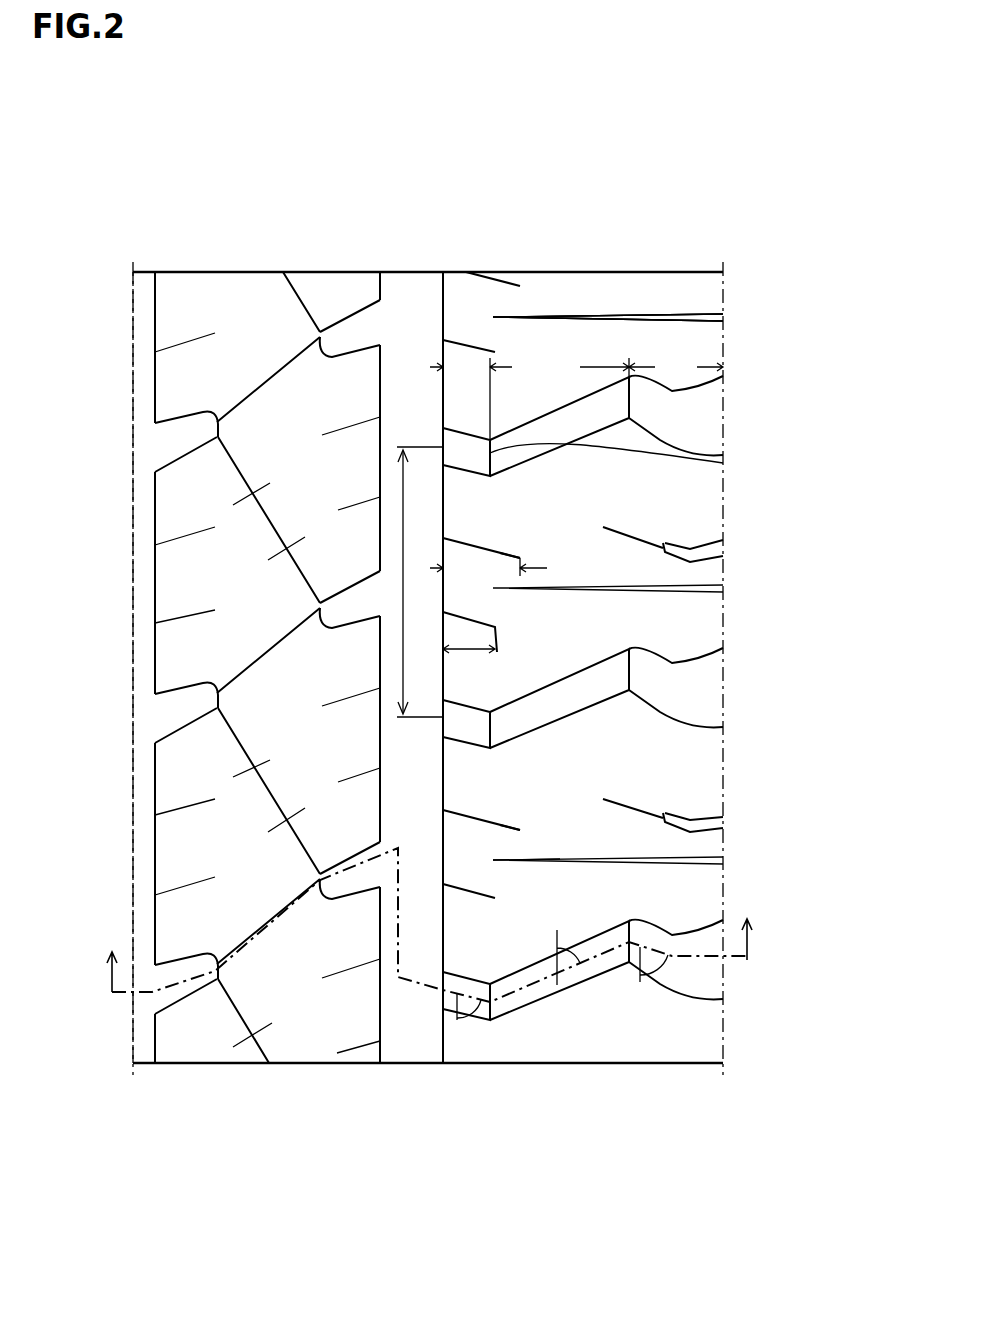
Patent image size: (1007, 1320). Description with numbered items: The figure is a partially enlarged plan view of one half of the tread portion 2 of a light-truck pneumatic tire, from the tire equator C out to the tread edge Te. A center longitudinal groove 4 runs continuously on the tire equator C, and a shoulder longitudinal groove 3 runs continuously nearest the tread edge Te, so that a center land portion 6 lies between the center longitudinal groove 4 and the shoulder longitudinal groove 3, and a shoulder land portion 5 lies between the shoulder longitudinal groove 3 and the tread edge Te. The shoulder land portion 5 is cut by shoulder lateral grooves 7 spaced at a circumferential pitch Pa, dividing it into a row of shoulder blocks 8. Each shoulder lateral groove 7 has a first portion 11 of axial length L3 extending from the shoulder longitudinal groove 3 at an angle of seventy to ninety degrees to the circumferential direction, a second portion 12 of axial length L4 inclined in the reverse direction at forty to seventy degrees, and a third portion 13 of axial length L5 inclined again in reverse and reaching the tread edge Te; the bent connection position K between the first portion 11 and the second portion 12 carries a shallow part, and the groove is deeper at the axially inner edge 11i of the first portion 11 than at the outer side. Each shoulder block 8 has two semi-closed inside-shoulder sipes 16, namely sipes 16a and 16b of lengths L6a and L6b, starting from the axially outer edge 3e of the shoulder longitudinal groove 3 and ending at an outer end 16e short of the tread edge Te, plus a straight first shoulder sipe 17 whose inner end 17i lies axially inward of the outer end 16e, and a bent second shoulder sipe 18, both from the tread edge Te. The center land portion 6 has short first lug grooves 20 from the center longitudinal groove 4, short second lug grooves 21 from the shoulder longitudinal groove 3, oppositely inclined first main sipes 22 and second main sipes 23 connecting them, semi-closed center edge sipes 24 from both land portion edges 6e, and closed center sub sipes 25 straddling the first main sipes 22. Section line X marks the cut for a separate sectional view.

The tread portion 2 is at (665, 268).
The shoulder longitudinal groove 3 is at (413, 301).
The axially outer edge of shoulder longitudinal groove 3e is at (437, 306).
The center longitudinal groove 4 is at (146, 300).
The shoulder land portion 5 is at (605, 307).
The shoulder block 8 is at (608, 317).
The center land portion 6 is at (208, 301).
The axial land portion edge 6e is at (155, 1040).
The shoulder lateral groove 7 is at (626, 797).
The first portion 11 is at (478, 1010).
The axially inner edge of first portion 11i is at (441, 445).
The second portion 12 is at (568, 982).
The third portion 13 is at (690, 967).
The inside-shoulder sipe 16 is at (637, 692).
The inside-shoulder sipe 16a is at (460, 615).
The inside-shoulder sipe 16b is at (467, 542).
The outer end of inside-shoulder sipe 16e is at (520, 827).
The first shoulder sipe 17 is at (663, 862).
The axially inner end of first shoulder sipe 17i is at (497, 860).
The second shoulder sipe 18 is at (666, 822).
The first lug groove 20 is at (185, 985).
The second lug groove 21 is at (352, 333).
The first main sipe 22 is at (275, 376).
The second main sipe 23 is at (240, 468).
The center edge sipe 24 is at (183, 885).
The center sub sipe 25 is at (250, 772).
The tire equator C is at (134, 651).
The tread edge Te is at (722, 651).
The connection position K is at (723, 463).
The circumferential pitch of shoulder lateral grooves Pa is at (415, 582).
The axial length of first portion L3 is at (471, 396).
The axial length of second portion L4 is at (586, 368).
The width of third block portion L5 is at (676, 368).
The length of inside-shoulder sipe 16a L6a is at (469, 665).
The length of inside-shoulder sipe 16b L6b is at (488, 568).
The section line X- X is at (434, 925).